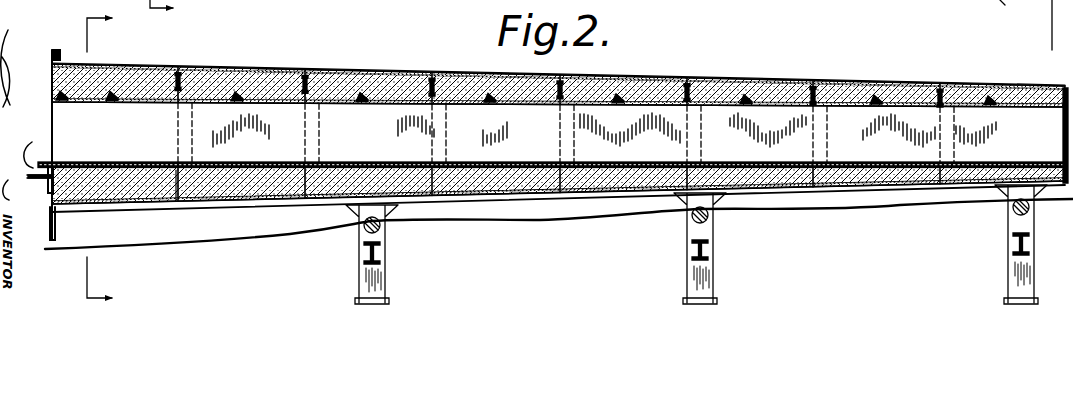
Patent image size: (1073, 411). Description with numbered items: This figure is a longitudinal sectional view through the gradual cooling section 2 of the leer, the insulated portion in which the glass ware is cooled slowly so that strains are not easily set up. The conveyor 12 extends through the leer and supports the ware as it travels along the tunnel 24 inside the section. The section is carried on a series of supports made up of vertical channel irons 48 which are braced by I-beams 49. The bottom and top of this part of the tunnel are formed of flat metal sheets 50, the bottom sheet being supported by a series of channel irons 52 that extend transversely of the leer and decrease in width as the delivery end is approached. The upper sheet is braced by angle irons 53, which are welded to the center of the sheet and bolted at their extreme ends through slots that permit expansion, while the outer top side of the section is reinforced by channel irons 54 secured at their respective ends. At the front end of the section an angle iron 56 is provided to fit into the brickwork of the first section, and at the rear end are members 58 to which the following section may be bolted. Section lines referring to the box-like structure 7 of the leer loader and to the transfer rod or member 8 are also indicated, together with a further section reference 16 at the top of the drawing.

The gradual cooling section 2 is at (911, 86).
The box-like structure 7 is at (172, 10).
The rod or member 8 is at (113, 161).
The conveyor 12 is at (566, 225).
The section line 16 is at (1026, 25).
The tunnel 24 is at (811, 150).
The vertical channel irons 48 is at (375, 281).
The I-beams 49 is at (375, 252).
The flat metal sheets 50 is at (78, 105).
The channel irons 52 is at (179, 192).
The angle irons 53 is at (245, 96).
The channel irons 54 is at (187, 69).
The angle iron 56 is at (45, 178).
The members 58 is at (1071, 95).